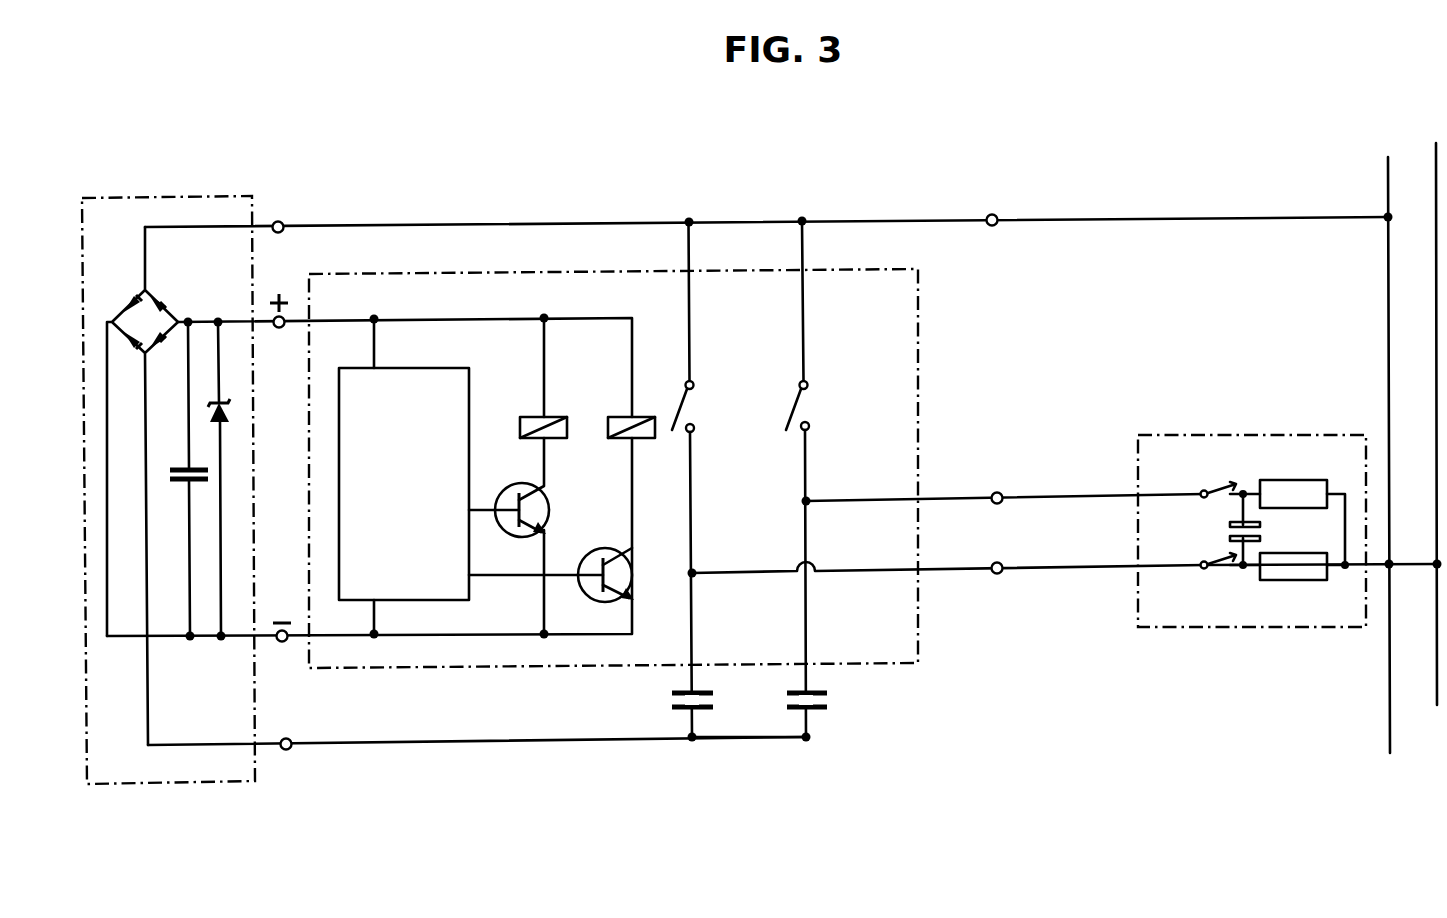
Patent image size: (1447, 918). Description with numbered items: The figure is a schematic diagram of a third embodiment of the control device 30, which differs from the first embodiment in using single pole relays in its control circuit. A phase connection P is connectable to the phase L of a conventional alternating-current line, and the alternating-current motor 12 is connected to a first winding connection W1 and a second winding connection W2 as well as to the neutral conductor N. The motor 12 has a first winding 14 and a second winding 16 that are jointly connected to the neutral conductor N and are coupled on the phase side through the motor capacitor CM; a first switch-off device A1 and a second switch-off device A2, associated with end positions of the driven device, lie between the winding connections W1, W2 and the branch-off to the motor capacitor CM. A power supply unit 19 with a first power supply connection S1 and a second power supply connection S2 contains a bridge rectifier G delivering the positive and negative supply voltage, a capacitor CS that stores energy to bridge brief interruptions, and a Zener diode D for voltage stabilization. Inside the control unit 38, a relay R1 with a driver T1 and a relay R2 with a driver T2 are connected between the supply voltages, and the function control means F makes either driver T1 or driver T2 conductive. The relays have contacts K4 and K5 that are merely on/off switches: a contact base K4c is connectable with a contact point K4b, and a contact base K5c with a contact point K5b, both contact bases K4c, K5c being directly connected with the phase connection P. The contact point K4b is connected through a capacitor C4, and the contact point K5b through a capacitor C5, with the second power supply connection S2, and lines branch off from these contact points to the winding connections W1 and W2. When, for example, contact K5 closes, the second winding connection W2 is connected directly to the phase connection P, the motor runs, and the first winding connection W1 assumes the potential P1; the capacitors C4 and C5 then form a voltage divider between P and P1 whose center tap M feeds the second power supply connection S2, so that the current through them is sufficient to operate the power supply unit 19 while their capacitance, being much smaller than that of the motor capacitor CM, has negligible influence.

The control device 30 is at (544, 192).
The power supply unit 19 is at (170, 188).
The control unit 38 is at (600, 258).
The alternating-current motor 12 is at (1257, 425).
The first winding 14 is at (1303, 568).
The second winding 16 is at (1300, 485).
The first power supply connection S1 is at (283, 216).
The second power supply connection S2 is at (287, 752).
The bridge rectifier G is at (140, 290).
The Zener diode D is at (223, 402).
The capacitor CS is at (172, 476).
The function control means F is at (404, 476).
The relay R1 is at (530, 417).
The relay R2 is at (612, 417).
The driver T1 is at (515, 491).
The driver T2 is at (601, 554).
The contact K4 is at (672, 390).
The contact K5 is at (790, 390).
The contact base K4c is at (684, 405).
The contact point K4b is at (694, 433).
The contact base K5c is at (799, 405).
The contact point K5b is at (812, 431).
The capacitor C4 is at (668, 697).
The capacitor C5 is at (832, 697).
The center tap M is at (749, 753).
The first winding connection W1 is at (998, 578).
The second winding connection W2 is at (997, 492).
The phase connection P is at (992, 213).
The phase L is at (1387, 438).
The neutral conductor N is at (1436, 413).
The first switch-off device A1 is at (1220, 560).
The second switch-off device A2 is at (1210, 486).
The potential P1 is at (1243, 570).
The motor capacitor CM is at (1228, 530).